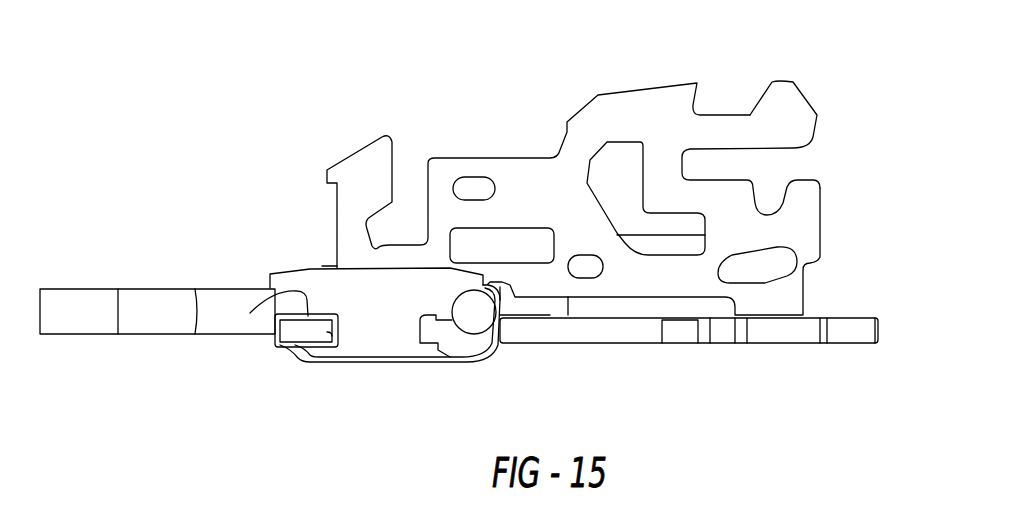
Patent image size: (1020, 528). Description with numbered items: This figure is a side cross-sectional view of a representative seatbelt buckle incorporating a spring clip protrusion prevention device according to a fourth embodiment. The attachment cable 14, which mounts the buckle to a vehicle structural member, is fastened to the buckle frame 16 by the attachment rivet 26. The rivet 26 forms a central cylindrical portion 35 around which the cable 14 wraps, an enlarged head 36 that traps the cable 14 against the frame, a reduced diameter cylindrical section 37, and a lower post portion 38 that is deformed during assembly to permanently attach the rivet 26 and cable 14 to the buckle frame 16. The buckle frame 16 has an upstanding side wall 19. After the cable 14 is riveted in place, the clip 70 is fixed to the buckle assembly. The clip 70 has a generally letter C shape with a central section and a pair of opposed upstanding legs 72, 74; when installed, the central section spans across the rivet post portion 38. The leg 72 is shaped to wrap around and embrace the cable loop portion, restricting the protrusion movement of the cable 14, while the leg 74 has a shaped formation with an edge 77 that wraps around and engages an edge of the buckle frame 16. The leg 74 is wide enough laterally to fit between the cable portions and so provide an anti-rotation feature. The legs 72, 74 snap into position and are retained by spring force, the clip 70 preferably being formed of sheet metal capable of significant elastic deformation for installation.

The attachment cable 14 is at (62, 289).
The buckle frame 16 is at (795, 222).
The upstanding side wall 19 is at (792, 108).
The attachment rivet 26 is at (313, 267).
The central cylindrical portion 35 is at (250, 313).
The enlarged head 36 is at (290, 268).
The reduced diameter cylindrical section 37 is at (332, 342).
The lower post portion 38 is at (375, 347).
The clip 70 is at (427, 363).
The leg 72 is at (510, 328).
The leg 74 is at (277, 347).
The edge 77 is at (275, 330).